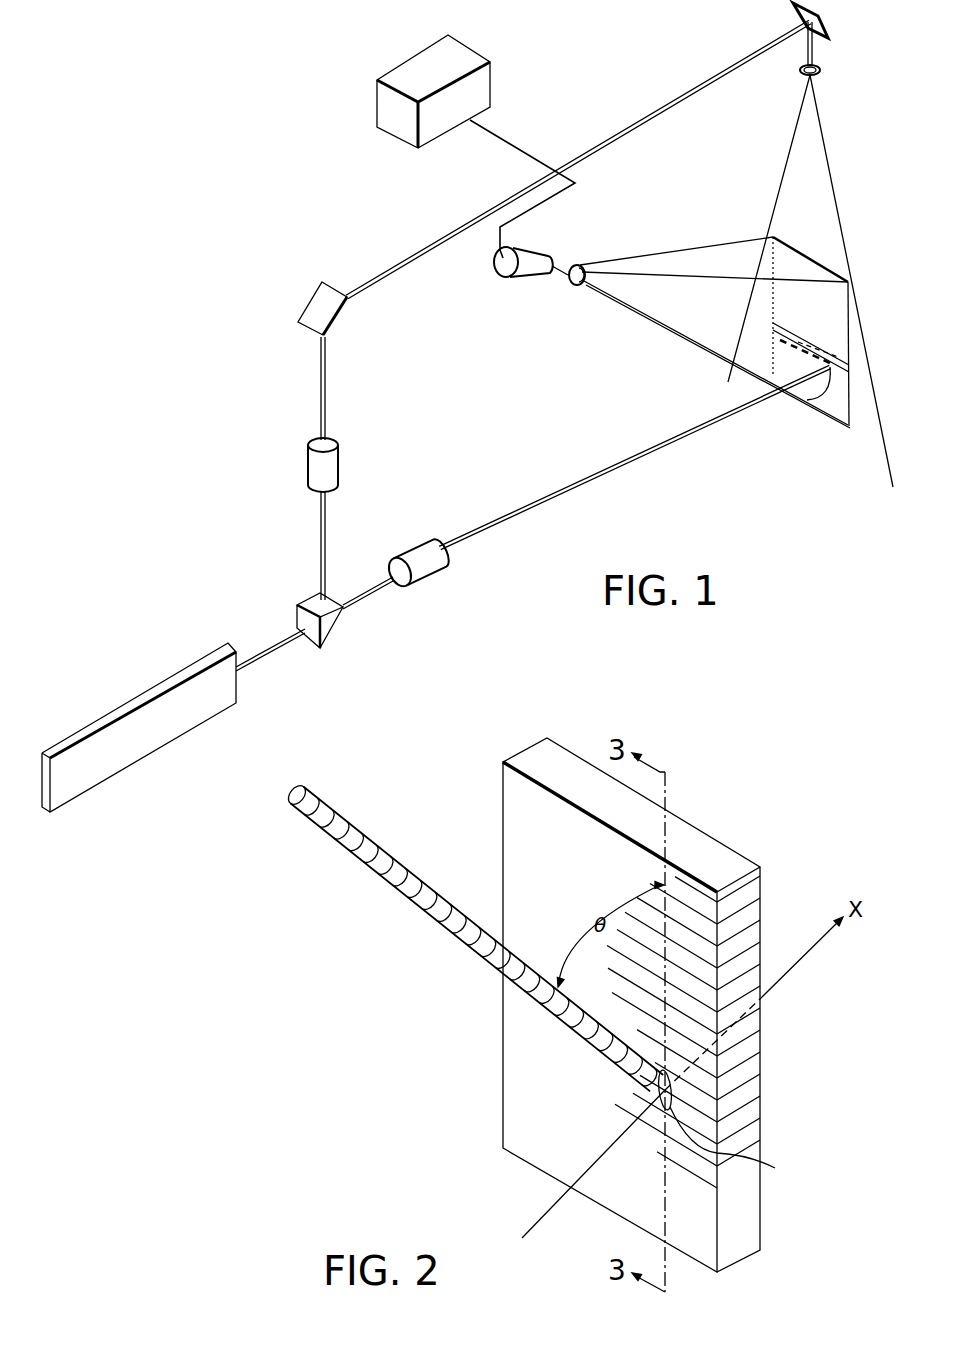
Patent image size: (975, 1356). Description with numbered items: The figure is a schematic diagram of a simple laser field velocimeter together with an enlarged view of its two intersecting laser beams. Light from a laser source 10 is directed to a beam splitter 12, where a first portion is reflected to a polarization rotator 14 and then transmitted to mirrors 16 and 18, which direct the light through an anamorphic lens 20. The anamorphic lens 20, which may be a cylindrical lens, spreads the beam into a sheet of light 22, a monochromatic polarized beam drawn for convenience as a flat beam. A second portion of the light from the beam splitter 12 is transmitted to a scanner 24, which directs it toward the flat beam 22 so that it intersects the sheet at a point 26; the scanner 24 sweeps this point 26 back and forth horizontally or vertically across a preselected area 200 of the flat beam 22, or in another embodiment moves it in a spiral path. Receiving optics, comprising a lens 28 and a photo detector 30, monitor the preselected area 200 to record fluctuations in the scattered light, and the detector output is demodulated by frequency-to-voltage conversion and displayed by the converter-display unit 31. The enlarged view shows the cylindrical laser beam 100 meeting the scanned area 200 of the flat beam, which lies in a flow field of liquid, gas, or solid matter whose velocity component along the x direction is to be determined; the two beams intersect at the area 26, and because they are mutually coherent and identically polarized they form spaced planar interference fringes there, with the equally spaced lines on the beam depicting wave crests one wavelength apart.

In FIG. 1, the laser source 10 is at (178, 672).
In FIG. 1, the beam splitter 12 is at (303, 600).
In FIG. 1, the polarization rotator 14 is at (307, 462).
In FIG. 1, the mirror 16 is at (313, 293).
In FIG. 1, the mirror 18 is at (827, 32).
In FIG. 1, the anamorphic lens 20 is at (822, 70).
In FIG. 1, the sheet of light 22 is at (828, 147).
In FIG. 1, the scanner 24 is at (408, 548).
In FIG. 1, the point 26 is at (804, 402).
In FIG. 2, the point 26 is at (725, 1132).
In FIG. 1, the lens 28 is at (580, 288).
In FIG. 1, the photo detector 30 is at (523, 280).
In FIG. 1, the converter-display unit 31 is at (377, 104).
In FIG. 1, the cylindrical laser beam 100 is at (573, 483).
In FIG. 2, the cylindrical laser beam 100 is at (344, 810).
In FIG. 1, the preselected area 200 is at (852, 415).
In FIG. 2, the preselected area 200 is at (528, 747).